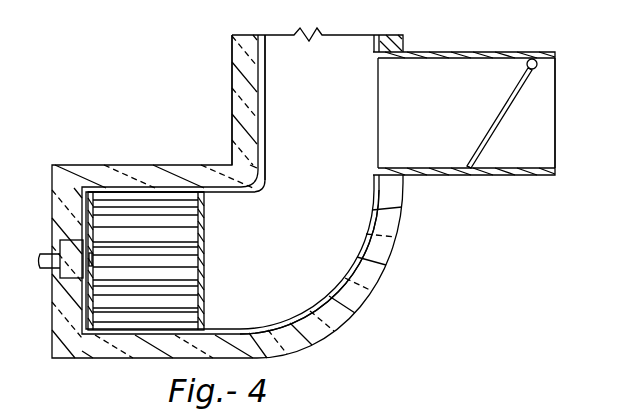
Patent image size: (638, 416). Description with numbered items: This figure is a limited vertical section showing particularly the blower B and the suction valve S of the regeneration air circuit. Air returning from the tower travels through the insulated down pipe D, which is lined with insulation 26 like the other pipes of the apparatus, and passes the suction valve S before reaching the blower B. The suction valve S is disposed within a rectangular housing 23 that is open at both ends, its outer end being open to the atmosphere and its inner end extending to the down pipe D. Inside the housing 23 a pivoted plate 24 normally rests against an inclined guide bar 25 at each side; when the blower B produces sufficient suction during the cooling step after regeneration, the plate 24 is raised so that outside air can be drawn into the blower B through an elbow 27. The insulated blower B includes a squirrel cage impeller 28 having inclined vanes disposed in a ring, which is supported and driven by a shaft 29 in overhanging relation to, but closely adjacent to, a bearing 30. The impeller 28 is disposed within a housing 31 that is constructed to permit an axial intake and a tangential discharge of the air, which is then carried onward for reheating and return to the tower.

The rectangular housing 23 is at (489, 177).
The pivoted plate 24 is at (507, 107).
The inclined guide bar 25 is at (500, 133).
The insulation 26 is at (50, 182).
The elbow 27 is at (332, 286).
The squirrel cage impeller 28 is at (193, 250).
The shaft 29 is at (48, 273).
The bearing 30 is at (68, 253).
The housing 31 is at (118, 187).
The blower B is at (169, 191).
The down pipe D is at (266, 97).
The suction valve S is at (537, 132).